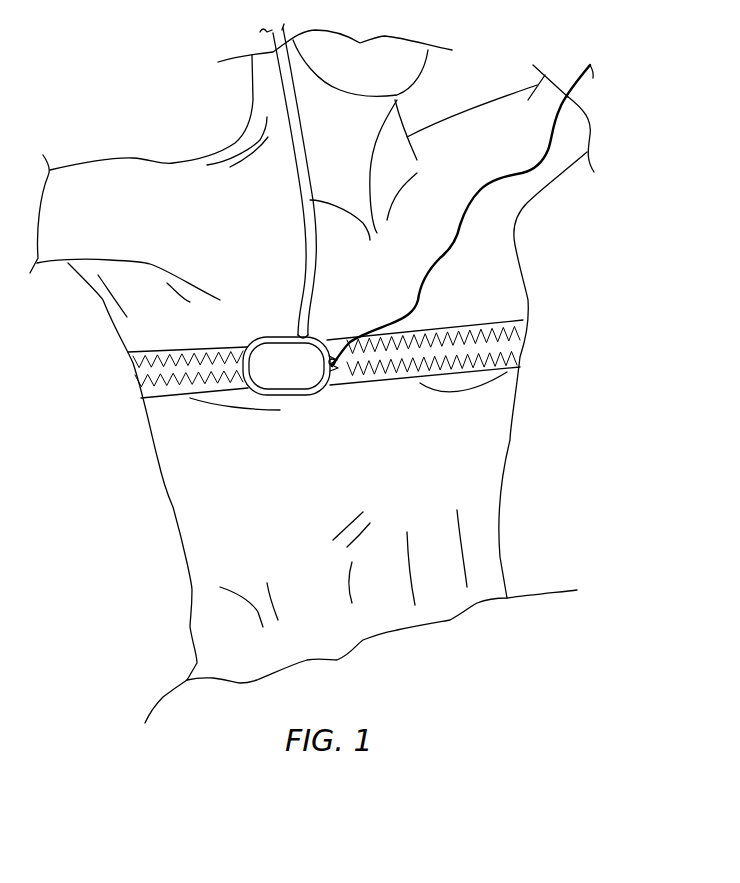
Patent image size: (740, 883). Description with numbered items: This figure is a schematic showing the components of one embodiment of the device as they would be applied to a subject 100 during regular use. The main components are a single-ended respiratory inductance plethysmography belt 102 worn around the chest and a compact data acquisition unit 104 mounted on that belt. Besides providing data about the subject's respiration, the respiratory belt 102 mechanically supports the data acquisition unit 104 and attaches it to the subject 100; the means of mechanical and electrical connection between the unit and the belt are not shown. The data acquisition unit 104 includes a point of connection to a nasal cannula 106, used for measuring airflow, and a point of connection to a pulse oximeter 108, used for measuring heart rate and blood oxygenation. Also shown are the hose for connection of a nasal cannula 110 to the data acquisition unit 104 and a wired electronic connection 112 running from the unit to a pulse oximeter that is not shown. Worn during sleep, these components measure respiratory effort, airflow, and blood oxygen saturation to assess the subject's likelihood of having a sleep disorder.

The subject 100 is at (138, 180).
The single-ended respiratory inductance plethysmography belt 102 is at (503, 347).
The compact data acquisition unit 104 is at (287, 372).
The point of connection to a nasal cannula 106 is at (300, 333).
The point of connection to a pulse oximeter 108 is at (336, 366).
The hose for connection of a nasal cannula 110 is at (303, 217).
The wired electronic connection 112 is at (592, 67).